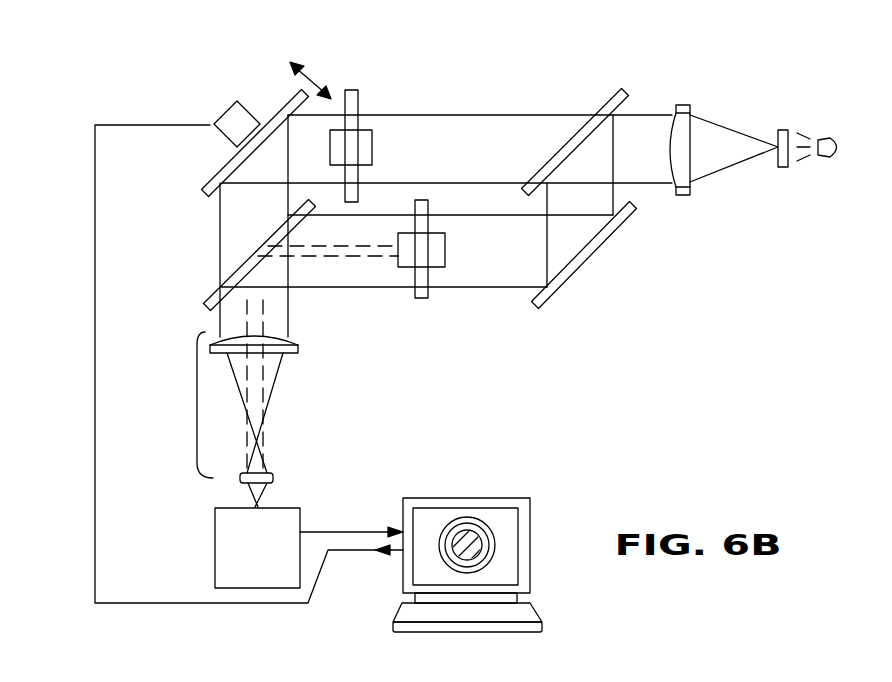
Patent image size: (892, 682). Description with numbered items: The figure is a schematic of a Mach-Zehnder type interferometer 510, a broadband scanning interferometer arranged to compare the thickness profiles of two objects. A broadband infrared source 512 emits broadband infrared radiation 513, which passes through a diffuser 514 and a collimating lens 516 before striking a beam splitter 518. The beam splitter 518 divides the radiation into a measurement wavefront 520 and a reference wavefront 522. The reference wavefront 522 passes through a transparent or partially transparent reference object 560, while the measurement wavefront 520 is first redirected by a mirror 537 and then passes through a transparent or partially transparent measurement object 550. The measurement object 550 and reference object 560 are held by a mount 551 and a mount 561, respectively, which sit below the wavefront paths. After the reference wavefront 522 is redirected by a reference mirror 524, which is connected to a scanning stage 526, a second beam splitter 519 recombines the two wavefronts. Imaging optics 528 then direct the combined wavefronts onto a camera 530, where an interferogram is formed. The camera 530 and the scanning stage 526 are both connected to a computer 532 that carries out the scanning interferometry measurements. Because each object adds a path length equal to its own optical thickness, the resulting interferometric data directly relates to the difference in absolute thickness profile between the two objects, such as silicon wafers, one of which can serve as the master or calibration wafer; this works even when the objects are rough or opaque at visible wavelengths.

The Mach-Zehnder type interferometer 510 is at (168, 244).
The broadband infrared source 512 is at (838, 136).
The broadband infrared radiation 513 is at (720, 155).
The diffuser 514 is at (783, 170).
The collimating lens 516 is at (680, 195).
The beam splitter 518 is at (612, 100).
The beam splitter 519 is at (205, 305).
The measurement wavefront 520 is at (487, 275).
The reference wavefront 522 is at (484, 128).
The reference mirror 524 is at (205, 185).
The scanning stage 526 is at (232, 102).
The imaging optics 528 is at (197, 405).
The camera 530 is at (215, 556).
The computer 532 is at (468, 498).
The mirror 537 is at (587, 265).
The measurement object 550 is at (428, 300).
The mount 551 is at (447, 247).
The reference object 560 is at (357, 90).
The mount 561 is at (372, 147).